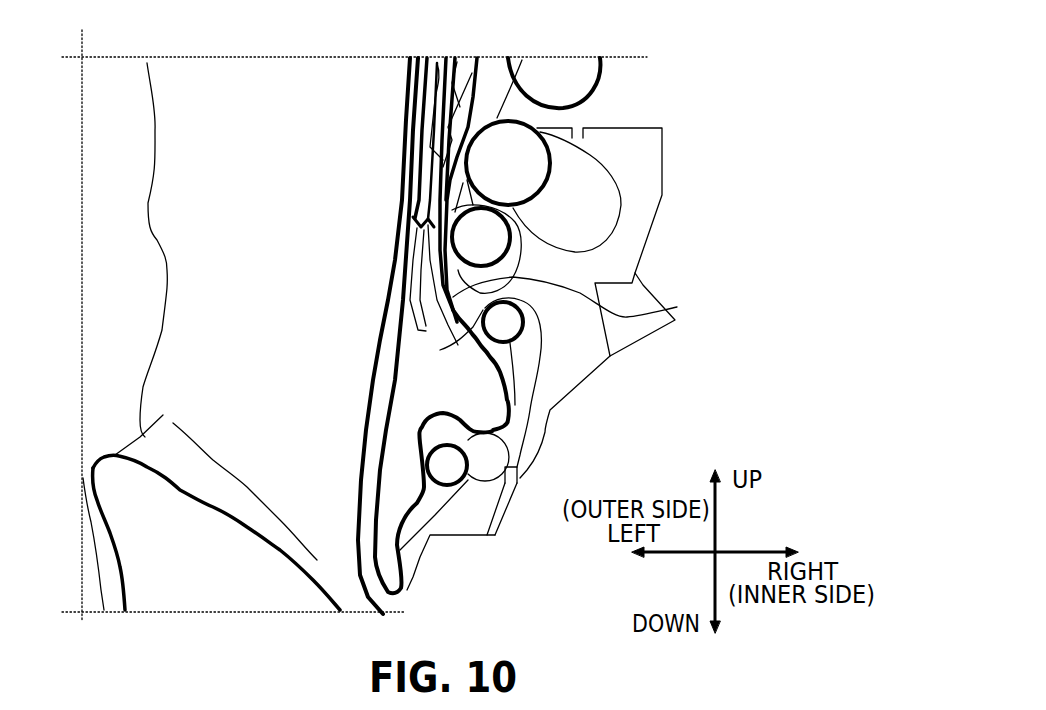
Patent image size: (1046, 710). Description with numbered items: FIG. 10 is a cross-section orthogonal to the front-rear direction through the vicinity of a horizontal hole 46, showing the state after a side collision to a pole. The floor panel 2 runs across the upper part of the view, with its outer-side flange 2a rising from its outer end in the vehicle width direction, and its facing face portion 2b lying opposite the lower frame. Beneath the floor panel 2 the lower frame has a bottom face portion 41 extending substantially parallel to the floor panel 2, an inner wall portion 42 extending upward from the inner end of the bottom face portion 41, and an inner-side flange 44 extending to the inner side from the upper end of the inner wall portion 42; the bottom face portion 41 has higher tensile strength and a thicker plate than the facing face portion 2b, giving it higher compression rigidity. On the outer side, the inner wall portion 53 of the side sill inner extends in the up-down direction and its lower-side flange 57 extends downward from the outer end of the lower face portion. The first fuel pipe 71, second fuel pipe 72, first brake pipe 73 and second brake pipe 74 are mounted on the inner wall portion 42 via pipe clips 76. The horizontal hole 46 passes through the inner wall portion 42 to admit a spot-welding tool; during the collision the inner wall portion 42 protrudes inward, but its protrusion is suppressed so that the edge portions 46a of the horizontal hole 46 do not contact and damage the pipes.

The floor panel 2 is at (606, 63).
The outer-side flange 2a is at (437, 62).
The facing face portion 2b is at (458, 62).
The bottom face portion 41 is at (512, 463).
The inner wall portion 42 is at (672, 313).
The inner-side flange 44 is at (488, 62).
The horizontal hole 46 is at (445, 298).
The edge portion 46a is at (445, 348).
The inner wall portion 53 is at (357, 483).
The lower-side flange 57 is at (188, 463).
The first fuel pipe 71 is at (491, 252).
The second fuel pipe 72 is at (516, 178).
The first brake pipe 73 is at (477, 484).
The second brake pipe 74 is at (550, 343).
The pipe clip 76 is at (648, 235).